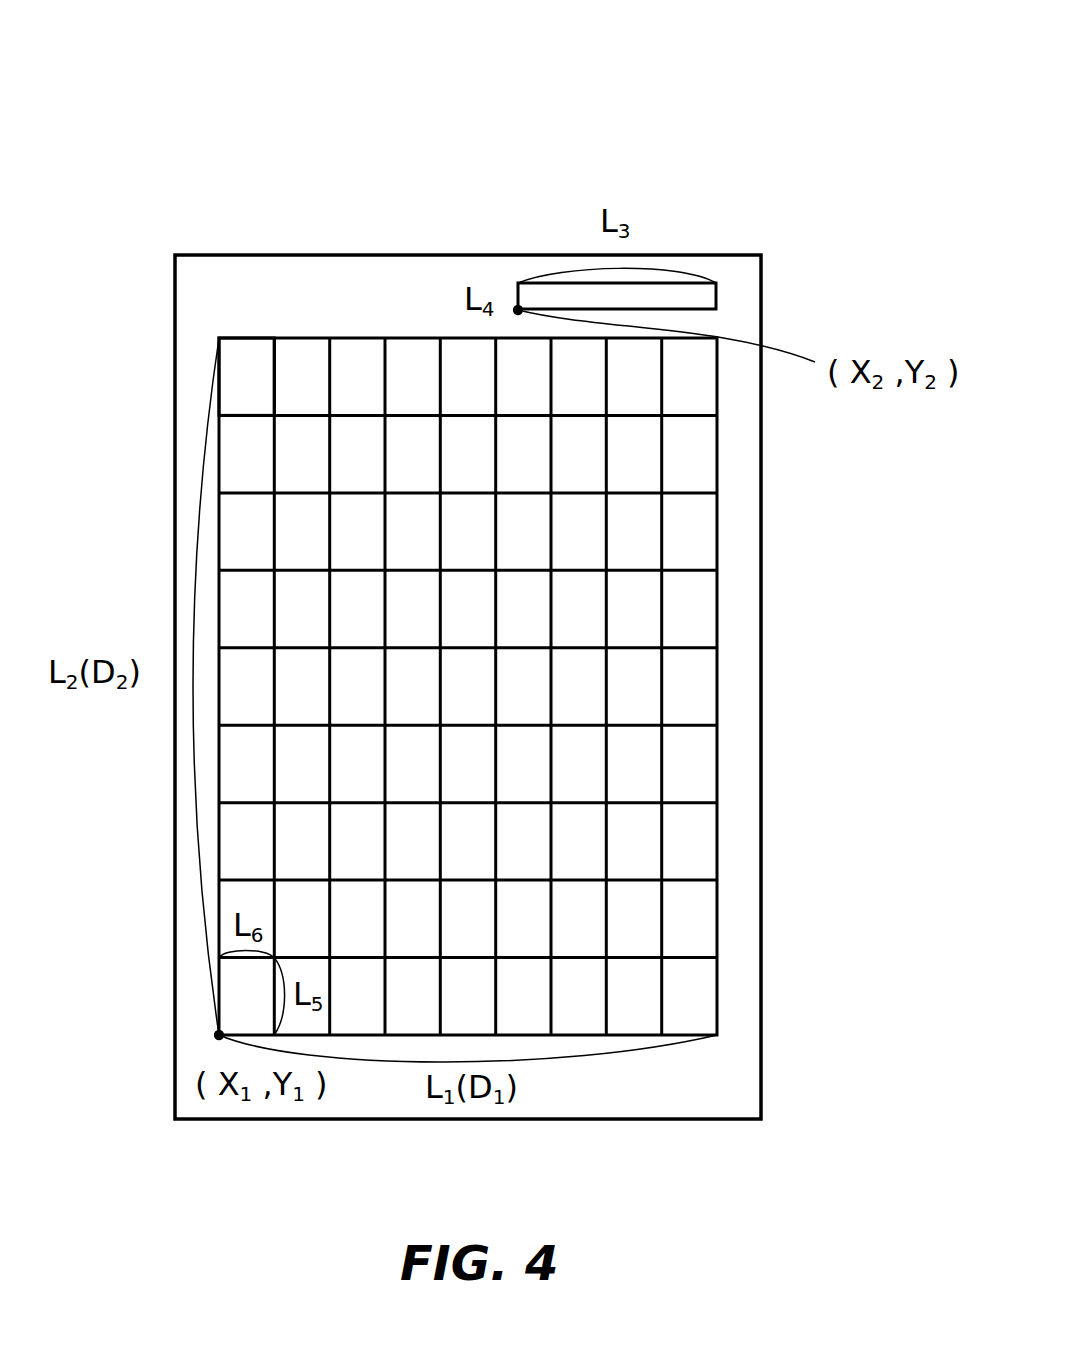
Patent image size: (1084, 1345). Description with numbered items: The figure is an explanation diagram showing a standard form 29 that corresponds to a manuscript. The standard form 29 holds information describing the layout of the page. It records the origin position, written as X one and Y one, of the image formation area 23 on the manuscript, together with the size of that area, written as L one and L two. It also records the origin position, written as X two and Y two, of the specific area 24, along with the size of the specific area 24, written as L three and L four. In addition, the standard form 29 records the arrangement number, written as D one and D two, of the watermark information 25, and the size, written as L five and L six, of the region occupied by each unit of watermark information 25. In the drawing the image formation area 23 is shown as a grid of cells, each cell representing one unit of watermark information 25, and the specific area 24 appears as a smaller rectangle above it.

The standard form 29 is at (728, 103).
The image formation area 23 is at (717, 625).
The specific area 24 is at (716, 283).
The watermark information 25 is at (240, 358).